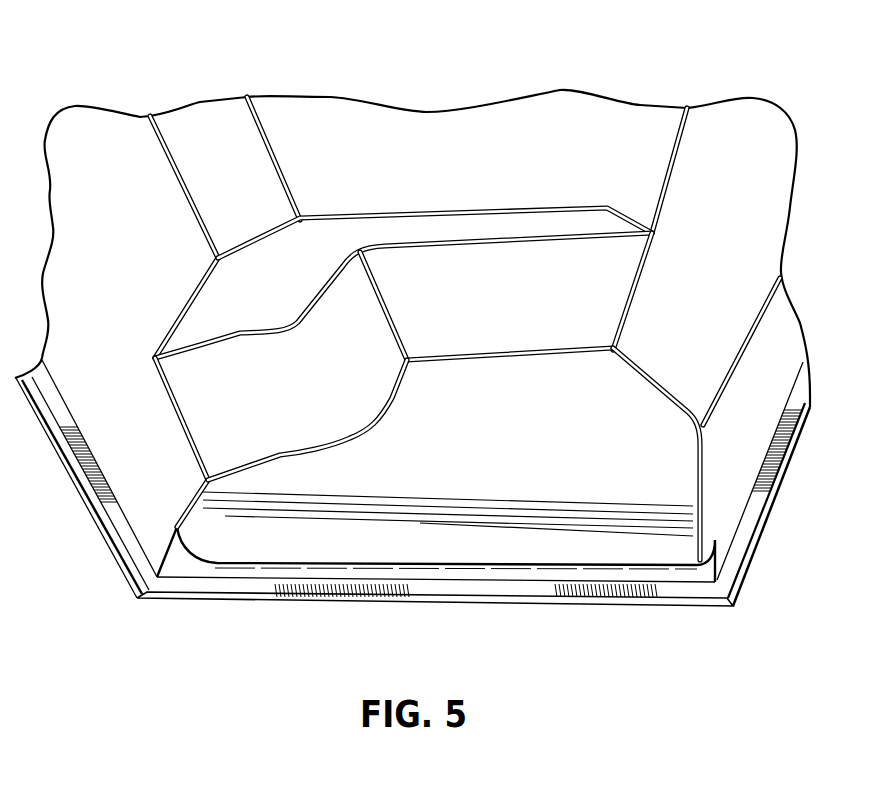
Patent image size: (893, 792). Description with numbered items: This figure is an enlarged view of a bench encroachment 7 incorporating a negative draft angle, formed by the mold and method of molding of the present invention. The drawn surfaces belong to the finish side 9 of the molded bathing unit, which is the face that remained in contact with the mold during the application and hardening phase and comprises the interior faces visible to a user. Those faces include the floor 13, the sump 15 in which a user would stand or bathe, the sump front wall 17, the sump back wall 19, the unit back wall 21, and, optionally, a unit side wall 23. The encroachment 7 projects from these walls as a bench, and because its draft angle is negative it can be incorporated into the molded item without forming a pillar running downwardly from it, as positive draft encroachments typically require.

The encroachment 7 is at (427, 229).
The finish side 9 is at (641, 122).
The floor 13 is at (640, 396).
The sump 15 is at (504, 378).
The sump front wall 17 is at (491, 553).
The sump back wall 19 is at (610, 296).
The unit back wall 21 is at (331, 121).
The unit side wall 23 is at (781, 329).